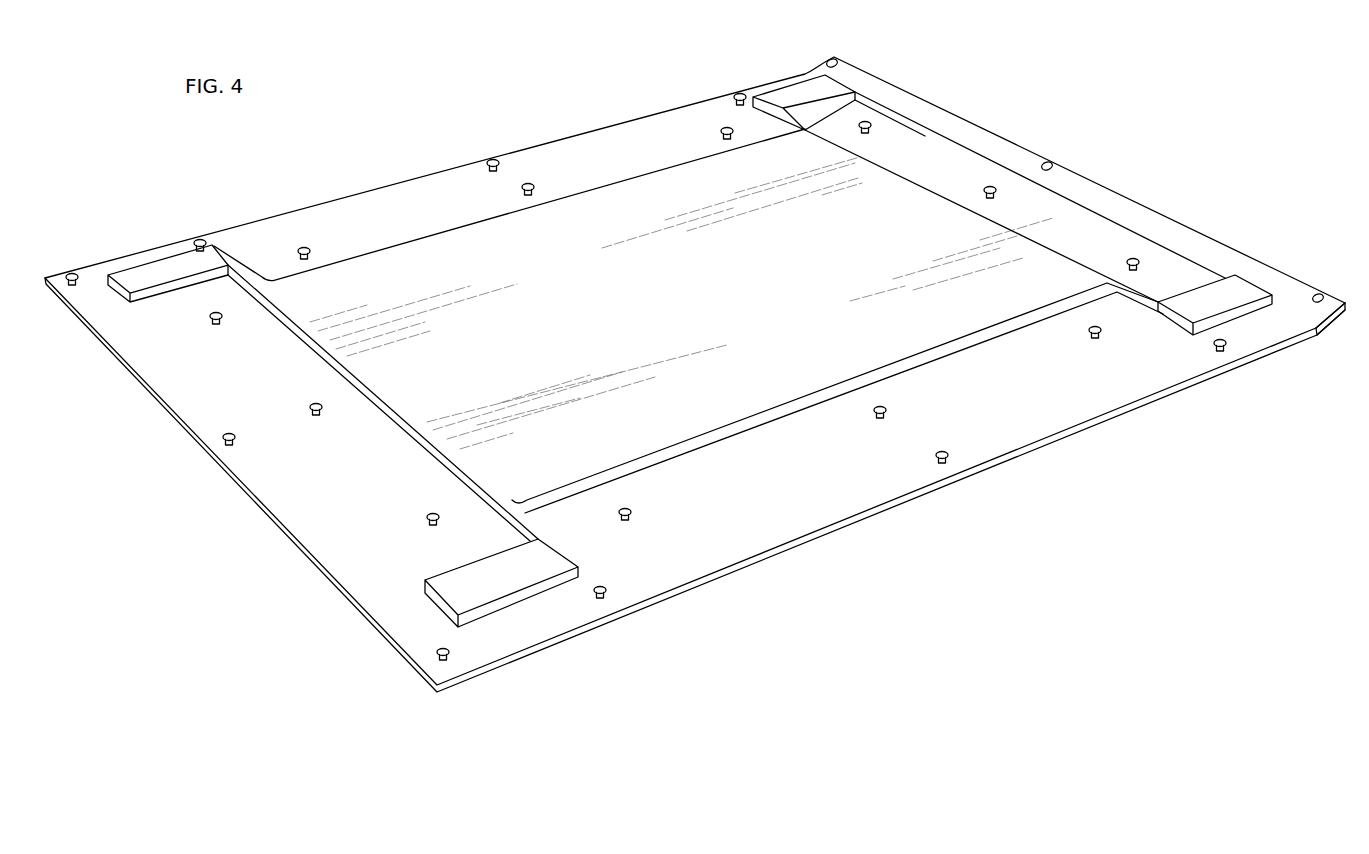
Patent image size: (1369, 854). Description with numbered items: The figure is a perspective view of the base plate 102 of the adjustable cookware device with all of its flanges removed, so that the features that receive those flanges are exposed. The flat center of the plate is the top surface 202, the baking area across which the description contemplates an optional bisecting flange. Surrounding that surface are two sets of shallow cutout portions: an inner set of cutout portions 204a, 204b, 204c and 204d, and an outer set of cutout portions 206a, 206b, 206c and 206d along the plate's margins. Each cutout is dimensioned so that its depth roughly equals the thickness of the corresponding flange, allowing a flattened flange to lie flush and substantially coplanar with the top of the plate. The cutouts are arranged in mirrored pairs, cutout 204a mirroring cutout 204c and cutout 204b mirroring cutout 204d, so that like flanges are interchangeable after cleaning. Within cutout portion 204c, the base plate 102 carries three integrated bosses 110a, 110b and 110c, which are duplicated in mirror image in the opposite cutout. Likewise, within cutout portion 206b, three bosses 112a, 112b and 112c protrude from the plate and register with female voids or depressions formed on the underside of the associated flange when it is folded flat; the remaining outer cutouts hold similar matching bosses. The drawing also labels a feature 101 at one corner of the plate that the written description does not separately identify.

The plate corner edge 101 is at (1338, 318).
The base plate 102 is at (884, 569).
The top surface 202 is at (683, 310).
The cutout portion 204a is at (300, 375).
The cutout portion 204b is at (803, 454).
The cutout portion 204c is at (946, 175).
The cutout portion 204d is at (586, 183).
The cutout portion 206a is at (236, 407).
The cutout portion 206b is at (905, 484).
The cutout portion 206c is at (1118, 212).
The cutout portion 206d is at (443, 183).
The integrated boss 110a is at (1135, 259).
The integrated boss 110b is at (990, 187).
The integrated boss 110c is at (865, 122).
The boss 112a is at (606, 592).
The boss 112b is at (948, 457).
The boss 112c is at (1226, 346).